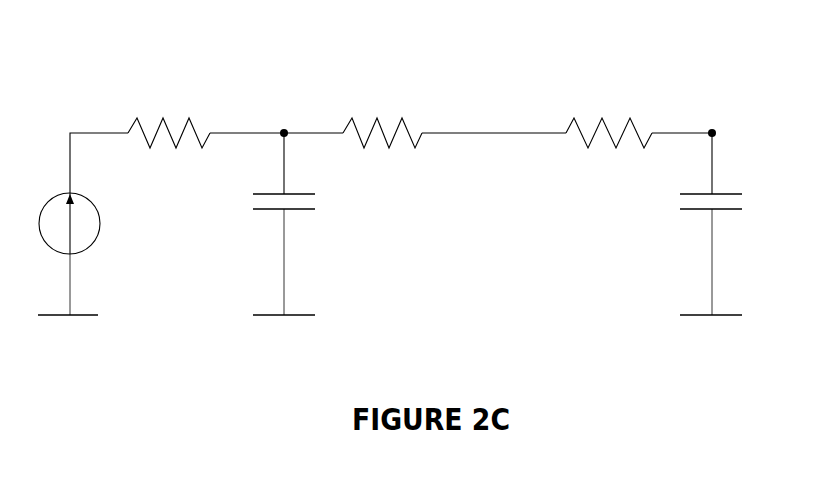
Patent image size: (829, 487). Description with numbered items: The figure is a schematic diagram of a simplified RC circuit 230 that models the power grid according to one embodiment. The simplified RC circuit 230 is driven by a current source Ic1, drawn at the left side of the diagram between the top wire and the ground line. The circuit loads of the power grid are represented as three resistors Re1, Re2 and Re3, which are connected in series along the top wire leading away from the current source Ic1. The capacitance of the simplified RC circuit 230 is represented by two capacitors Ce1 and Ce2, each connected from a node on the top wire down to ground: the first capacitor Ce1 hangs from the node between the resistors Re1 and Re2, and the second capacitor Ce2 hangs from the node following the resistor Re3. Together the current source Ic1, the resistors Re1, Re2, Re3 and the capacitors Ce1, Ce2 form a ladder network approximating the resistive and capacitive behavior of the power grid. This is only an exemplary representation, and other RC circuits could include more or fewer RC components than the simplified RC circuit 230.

The simplified RC circuit 230 is at (193, 37).
The resistor Re1 is at (169, 114).
The resistor Re2 is at (382, 114).
The resistor Re3 is at (609, 114).
The capacitor Ce1 is at (270, 171).
The capacitor Ce2 is at (690, 171).
The current source Ic1 is at (90, 223).